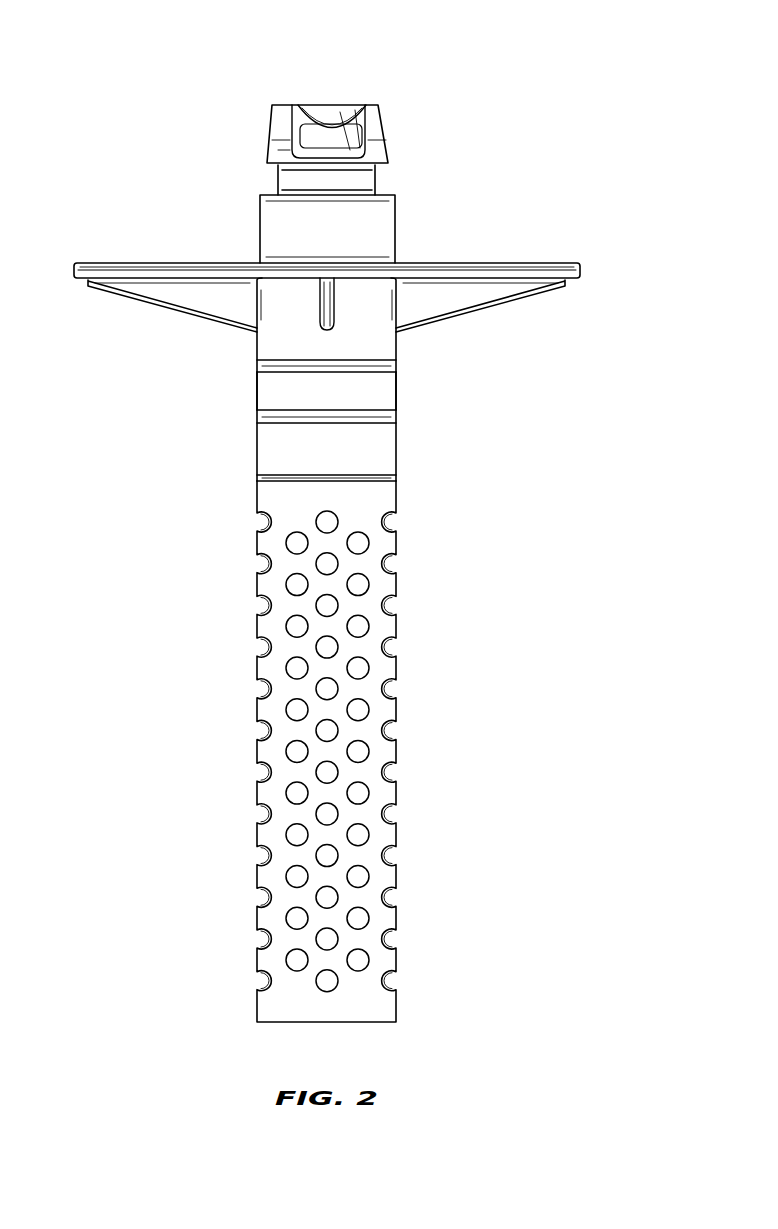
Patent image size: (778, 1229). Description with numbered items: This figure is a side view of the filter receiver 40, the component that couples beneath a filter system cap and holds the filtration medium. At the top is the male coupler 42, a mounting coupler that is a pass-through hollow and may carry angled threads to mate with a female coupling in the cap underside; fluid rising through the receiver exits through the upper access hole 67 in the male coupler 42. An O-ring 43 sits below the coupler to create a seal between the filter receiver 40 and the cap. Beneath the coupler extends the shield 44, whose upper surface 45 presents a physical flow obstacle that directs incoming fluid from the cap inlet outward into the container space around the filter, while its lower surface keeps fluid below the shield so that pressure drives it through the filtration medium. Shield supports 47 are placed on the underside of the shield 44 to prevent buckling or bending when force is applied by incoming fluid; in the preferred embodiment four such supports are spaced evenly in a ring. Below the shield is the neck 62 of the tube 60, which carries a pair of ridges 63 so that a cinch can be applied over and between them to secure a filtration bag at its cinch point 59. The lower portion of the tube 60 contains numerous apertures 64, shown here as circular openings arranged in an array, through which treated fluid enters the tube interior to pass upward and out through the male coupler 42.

The filter receiver 40 is at (116, 122).
The male coupler 42 is at (383, 120).
The O-ring 43 is at (380, 180).
The shield 44 is at (532, 263).
The upper surface 45 is at (495, 263).
The shield supports 47 is at (130, 295).
The cinch point 59 is at (397, 389).
The tube 60 is at (234, 796).
The neck 62 is at (242, 397).
The ridges 63 is at (257, 368).
The apertures 64 is at (393, 522).
The upper access hole 67 is at (328, 110).